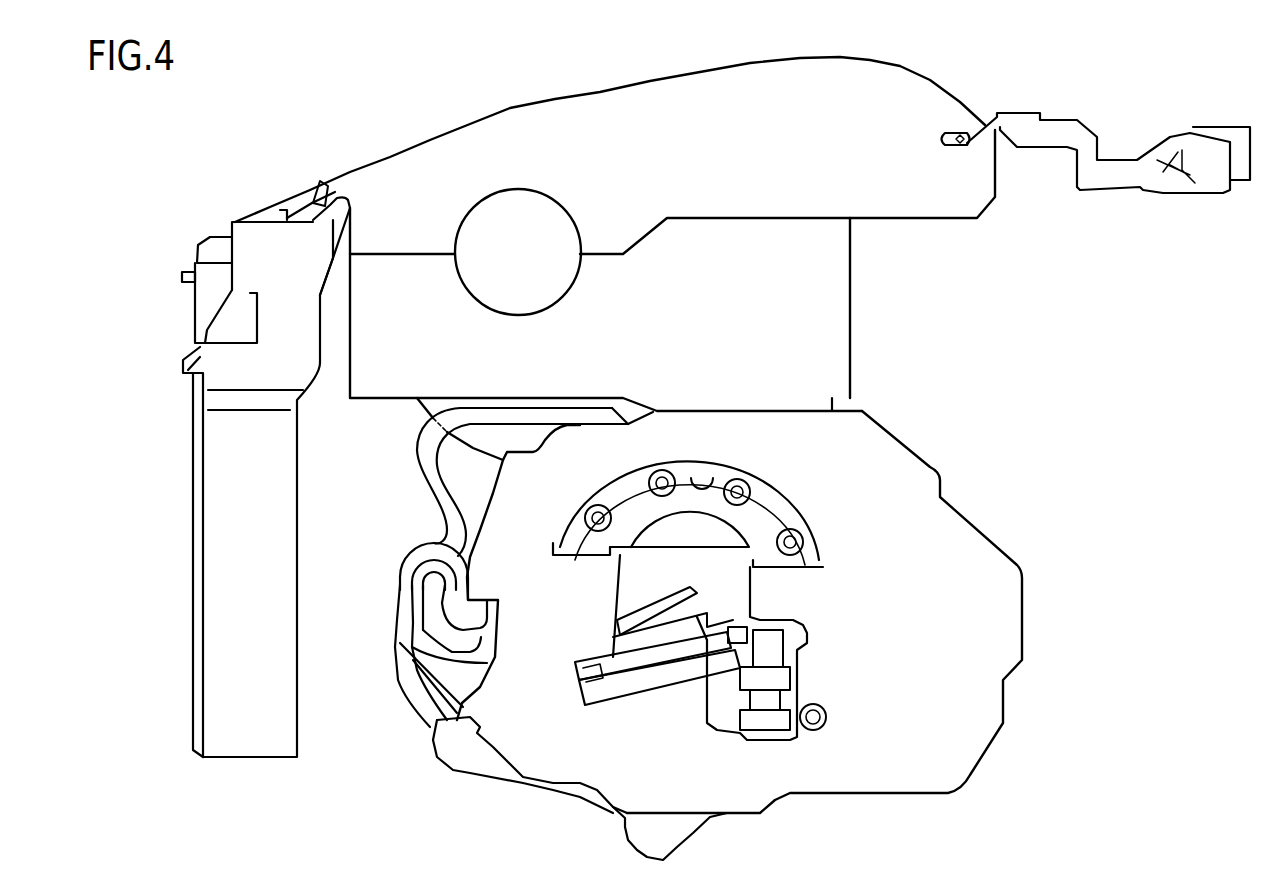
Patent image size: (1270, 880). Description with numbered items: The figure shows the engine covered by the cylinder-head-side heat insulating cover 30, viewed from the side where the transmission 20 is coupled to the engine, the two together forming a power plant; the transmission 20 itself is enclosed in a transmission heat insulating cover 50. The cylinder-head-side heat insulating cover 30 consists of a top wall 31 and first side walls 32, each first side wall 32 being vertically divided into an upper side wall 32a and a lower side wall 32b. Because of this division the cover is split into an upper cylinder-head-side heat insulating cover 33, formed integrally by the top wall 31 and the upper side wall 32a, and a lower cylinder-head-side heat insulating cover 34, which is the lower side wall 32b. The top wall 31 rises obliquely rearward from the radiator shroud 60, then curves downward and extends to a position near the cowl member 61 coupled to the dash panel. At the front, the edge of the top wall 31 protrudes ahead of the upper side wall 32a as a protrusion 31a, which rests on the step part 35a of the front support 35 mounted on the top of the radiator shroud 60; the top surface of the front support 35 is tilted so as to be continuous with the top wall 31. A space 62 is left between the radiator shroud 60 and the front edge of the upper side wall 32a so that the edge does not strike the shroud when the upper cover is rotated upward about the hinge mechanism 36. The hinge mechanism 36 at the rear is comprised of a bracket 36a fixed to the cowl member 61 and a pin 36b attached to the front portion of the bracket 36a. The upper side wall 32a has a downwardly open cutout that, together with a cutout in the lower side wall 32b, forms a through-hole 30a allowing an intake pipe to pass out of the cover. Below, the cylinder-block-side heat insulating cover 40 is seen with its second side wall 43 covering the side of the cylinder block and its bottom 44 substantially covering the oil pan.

The transmission 20 is at (725, 715).
The cylinder-head-side heat insulating cover 30 is at (625, 231).
The through-hole 30a is at (548, 308).
The top wall 31 is at (512, 112).
The protrusion 31a is at (326, 180).
The first side wall 32 is at (625, 231).
The upper side wall 32a is at (583, 122).
The lower side wall 32b is at (825, 318).
The upper cylinder-head-side heat insulating cover 33 is at (610, 136).
The lower cylinder-head-side heat insulating cover 34 is at (683, 270).
The front support 35 is at (275, 213).
The step part 35a is at (345, 198).
The hinge mechanism 36 is at (1096, 121).
The bracket 36a is at (1020, 113).
The pin 36b is at (963, 137).
The cylinder-block-side heat insulating cover 40 is at (700, 608).
The second side wall 43 is at (815, 396).
The bottom 44 is at (622, 832).
The transmission heat insulating cover 50 is at (738, 625).
The radiator shroud 60 is at (215, 467).
The cowl member 61 is at (1170, 180).
The space 62 is at (341, 272).